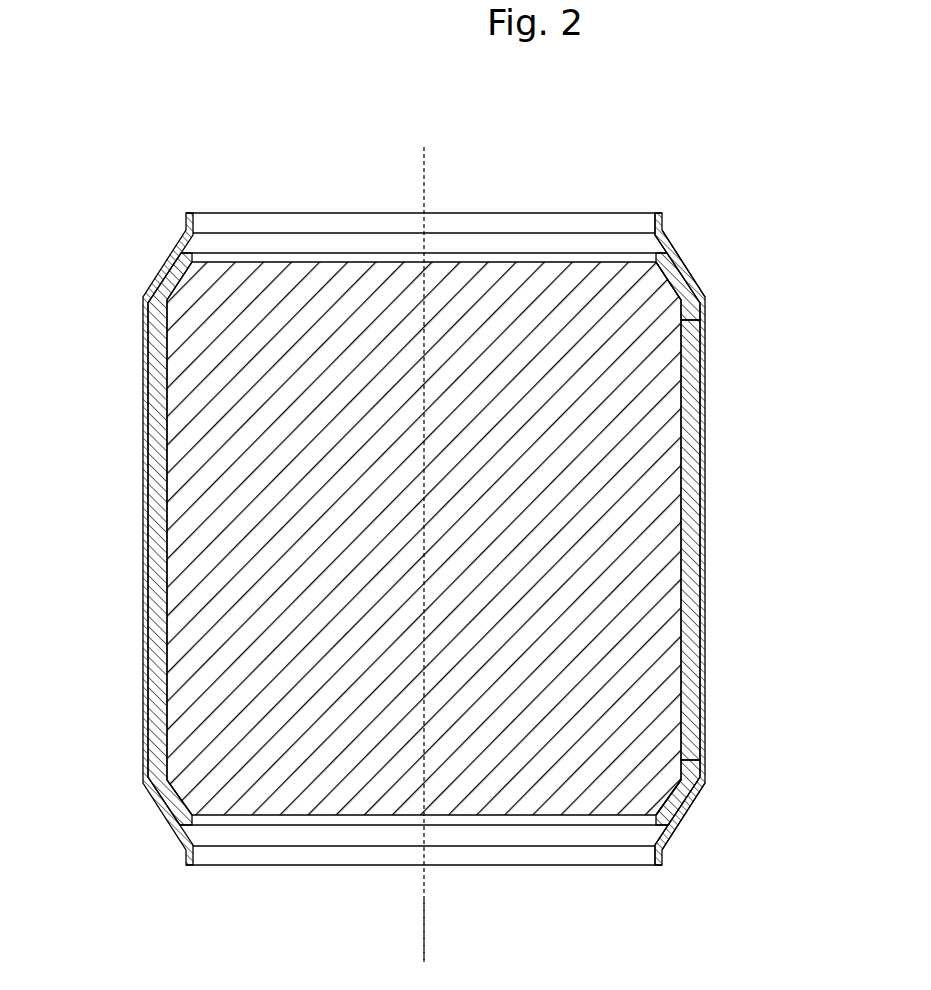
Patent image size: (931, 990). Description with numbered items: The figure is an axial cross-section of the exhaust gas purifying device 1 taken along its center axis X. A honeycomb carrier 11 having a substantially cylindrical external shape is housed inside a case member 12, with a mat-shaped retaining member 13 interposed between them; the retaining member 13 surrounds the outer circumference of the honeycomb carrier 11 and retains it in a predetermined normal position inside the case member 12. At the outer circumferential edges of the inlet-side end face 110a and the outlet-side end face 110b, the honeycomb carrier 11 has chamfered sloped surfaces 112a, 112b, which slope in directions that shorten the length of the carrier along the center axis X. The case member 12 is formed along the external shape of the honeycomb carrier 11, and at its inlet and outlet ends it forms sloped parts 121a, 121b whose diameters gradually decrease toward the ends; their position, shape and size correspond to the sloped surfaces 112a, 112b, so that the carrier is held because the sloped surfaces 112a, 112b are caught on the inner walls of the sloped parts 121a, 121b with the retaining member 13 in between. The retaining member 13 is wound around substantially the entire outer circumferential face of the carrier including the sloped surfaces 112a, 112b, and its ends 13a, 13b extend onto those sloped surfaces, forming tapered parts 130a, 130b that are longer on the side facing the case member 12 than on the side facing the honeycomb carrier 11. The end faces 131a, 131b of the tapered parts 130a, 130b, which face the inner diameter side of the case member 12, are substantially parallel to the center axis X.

The exhaust gas purifying device 1 is at (553, 149).
The honeycomb carrier 11 is at (185, 354).
The case member 12 is at (143, 458).
The retaining member 13 is at (150, 390).
The end of retaining member 13a is at (733, 236).
The end of retaining member 13b is at (706, 857).
The inlet-side end face 110a is at (331, 259).
The outlet-side end face 110b is at (331, 821).
The sloped surface 112a is at (681, 287).
The sloped surface 112b is at (684, 790).
The sloped part 121a is at (690, 252).
The sloped part 121b is at (693, 818).
The tapered part 130a is at (688, 261).
The tapered part 130b is at (680, 823).
The end face of tapered part 131a is at (661, 258).
The end face of tapered part 131b is at (662, 821).
The center axis X is at (424, 940).